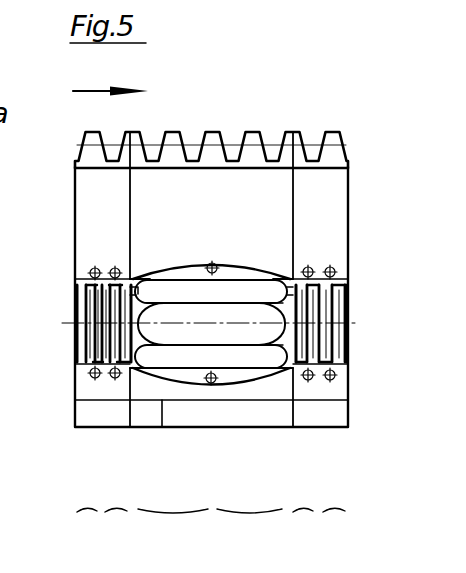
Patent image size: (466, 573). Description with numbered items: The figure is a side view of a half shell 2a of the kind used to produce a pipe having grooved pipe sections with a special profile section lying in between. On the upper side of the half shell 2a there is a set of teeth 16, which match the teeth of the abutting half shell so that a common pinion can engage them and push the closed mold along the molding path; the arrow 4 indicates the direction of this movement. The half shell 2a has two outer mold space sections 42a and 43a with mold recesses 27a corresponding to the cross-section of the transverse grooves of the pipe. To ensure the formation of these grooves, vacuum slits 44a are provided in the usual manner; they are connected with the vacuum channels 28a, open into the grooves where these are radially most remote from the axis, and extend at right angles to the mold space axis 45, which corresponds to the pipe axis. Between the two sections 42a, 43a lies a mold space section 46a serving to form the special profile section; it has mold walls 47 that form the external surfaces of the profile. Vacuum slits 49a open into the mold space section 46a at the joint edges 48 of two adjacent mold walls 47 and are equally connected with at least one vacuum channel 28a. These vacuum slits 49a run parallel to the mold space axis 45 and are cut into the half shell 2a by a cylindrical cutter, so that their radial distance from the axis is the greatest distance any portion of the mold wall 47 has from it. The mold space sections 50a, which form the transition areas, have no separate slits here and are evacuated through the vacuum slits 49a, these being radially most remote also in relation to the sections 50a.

The half shell 2a is at (257, 100).
The direction of adjustment arrow 4 is at (110, 78).
The set of teeth 16 is at (326, 153).
The mold space section 50a is at (128, 262).
The mold recesses 27a is at (78, 367).
The vacuum slits 44a is at (118, 360).
The mold space axis 45 is at (350, 323).
The vacuum channels 28a is at (92, 268).
The vacuum slits 49a is at (193, 273).
The mold walls 47 is at (217, 288).
The joint edges 48 is at (230, 343).
The mold space section 42a is at (101, 534).
The mold space section 46a is at (210, 534).
The mold space section 43a is at (319, 534).